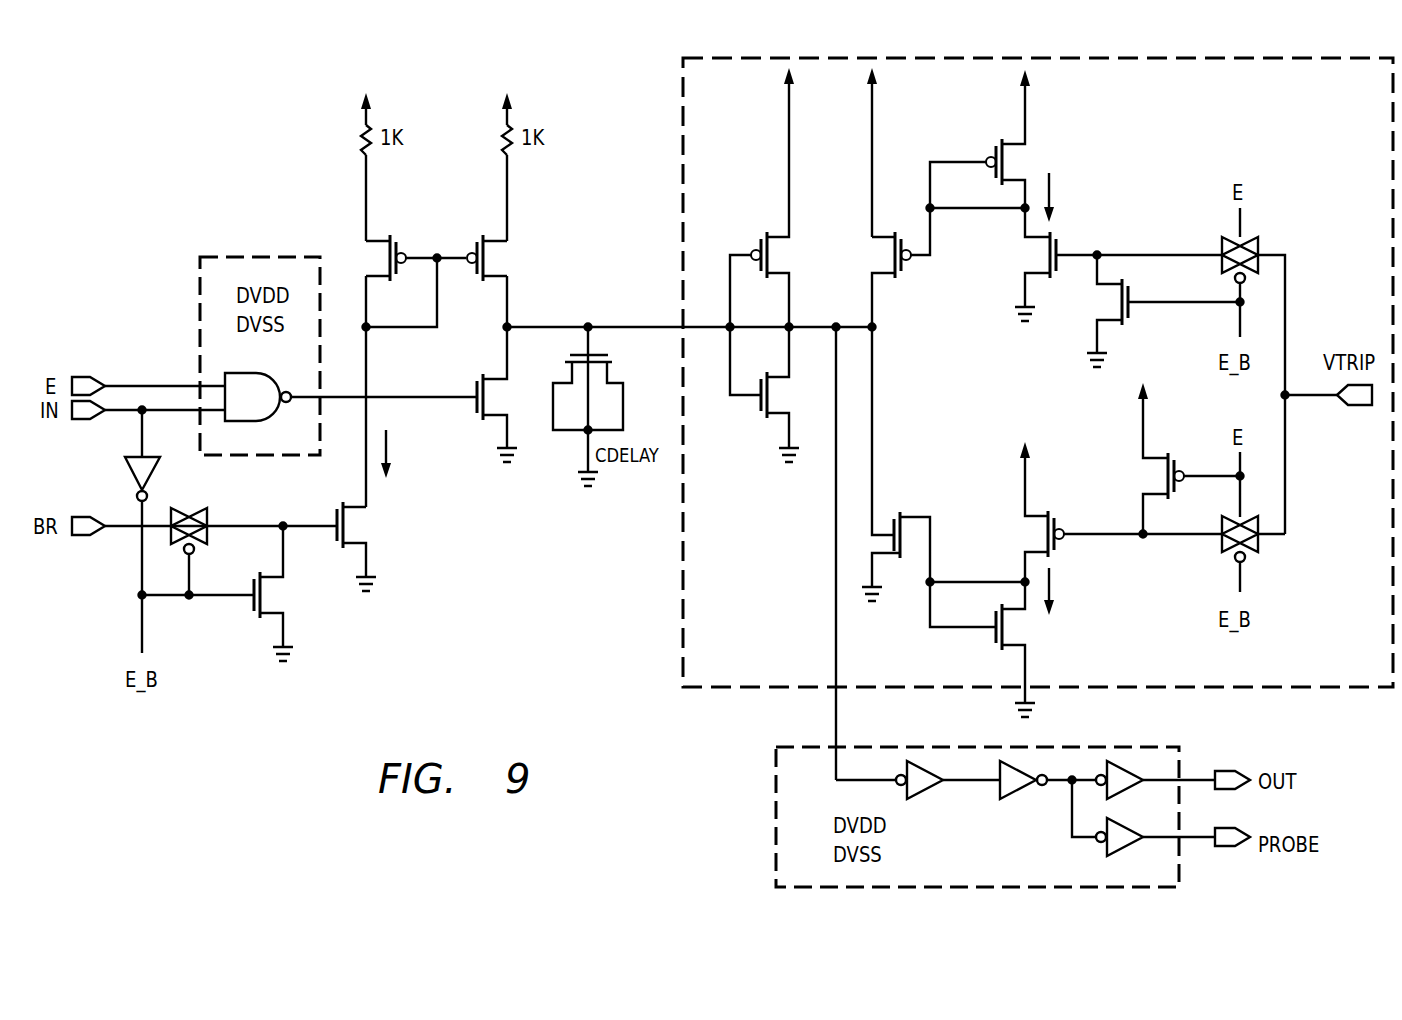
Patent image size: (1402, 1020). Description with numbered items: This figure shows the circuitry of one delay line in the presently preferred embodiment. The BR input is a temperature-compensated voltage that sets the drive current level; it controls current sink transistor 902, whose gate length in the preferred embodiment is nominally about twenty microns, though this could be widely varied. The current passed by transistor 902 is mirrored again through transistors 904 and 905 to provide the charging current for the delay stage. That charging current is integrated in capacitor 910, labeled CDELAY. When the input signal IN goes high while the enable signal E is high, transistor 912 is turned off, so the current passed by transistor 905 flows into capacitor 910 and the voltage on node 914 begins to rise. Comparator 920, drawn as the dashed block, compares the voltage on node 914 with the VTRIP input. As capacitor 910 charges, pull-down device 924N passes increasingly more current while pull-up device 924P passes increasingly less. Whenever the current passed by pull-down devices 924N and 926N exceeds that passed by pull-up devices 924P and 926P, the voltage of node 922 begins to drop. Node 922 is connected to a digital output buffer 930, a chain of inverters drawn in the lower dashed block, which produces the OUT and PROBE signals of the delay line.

The current sink transistor 902 is at (367, 530).
The transistor 904 is at (370, 250).
The transistor 905 is at (503, 248).
The capacitor 910 is at (572, 412).
The transistor 912 is at (480, 422).
The node 914 is at (645, 327).
The comparator 920 is at (1222, 151).
The node 922 is at (878, 72).
The pull-up device 924P is at (760, 233).
The pull-down device 924N is at (758, 418).
The pull-up device 926P is at (903, 278).
The pull-down device 926N is at (902, 517).
The digital output buffer 930 is at (923, 792).